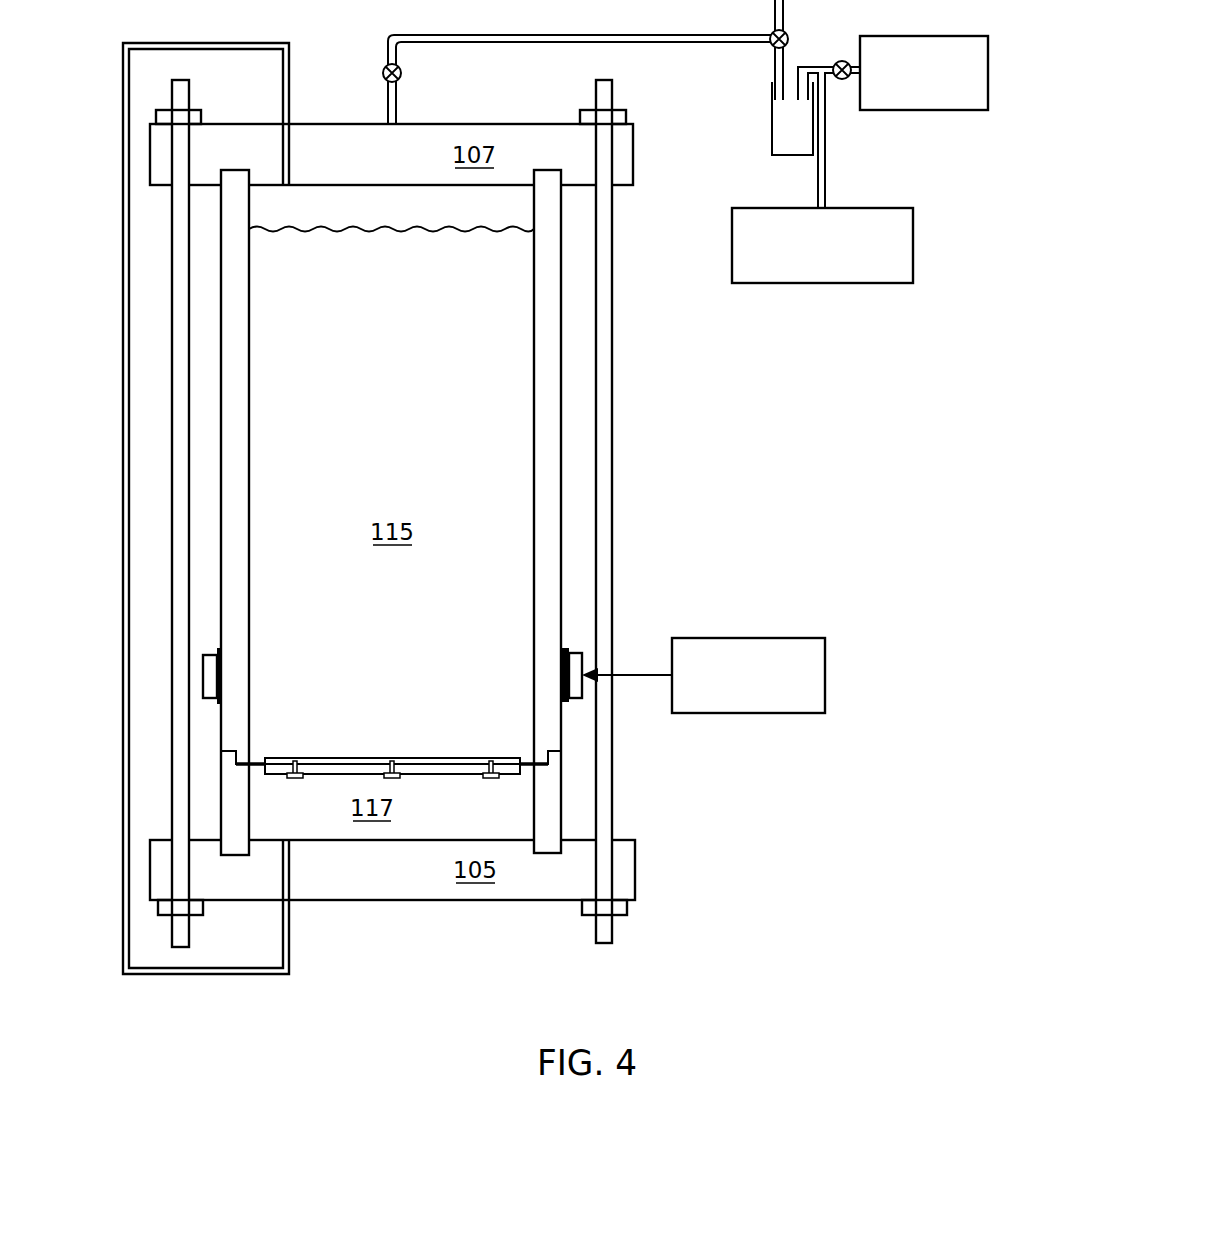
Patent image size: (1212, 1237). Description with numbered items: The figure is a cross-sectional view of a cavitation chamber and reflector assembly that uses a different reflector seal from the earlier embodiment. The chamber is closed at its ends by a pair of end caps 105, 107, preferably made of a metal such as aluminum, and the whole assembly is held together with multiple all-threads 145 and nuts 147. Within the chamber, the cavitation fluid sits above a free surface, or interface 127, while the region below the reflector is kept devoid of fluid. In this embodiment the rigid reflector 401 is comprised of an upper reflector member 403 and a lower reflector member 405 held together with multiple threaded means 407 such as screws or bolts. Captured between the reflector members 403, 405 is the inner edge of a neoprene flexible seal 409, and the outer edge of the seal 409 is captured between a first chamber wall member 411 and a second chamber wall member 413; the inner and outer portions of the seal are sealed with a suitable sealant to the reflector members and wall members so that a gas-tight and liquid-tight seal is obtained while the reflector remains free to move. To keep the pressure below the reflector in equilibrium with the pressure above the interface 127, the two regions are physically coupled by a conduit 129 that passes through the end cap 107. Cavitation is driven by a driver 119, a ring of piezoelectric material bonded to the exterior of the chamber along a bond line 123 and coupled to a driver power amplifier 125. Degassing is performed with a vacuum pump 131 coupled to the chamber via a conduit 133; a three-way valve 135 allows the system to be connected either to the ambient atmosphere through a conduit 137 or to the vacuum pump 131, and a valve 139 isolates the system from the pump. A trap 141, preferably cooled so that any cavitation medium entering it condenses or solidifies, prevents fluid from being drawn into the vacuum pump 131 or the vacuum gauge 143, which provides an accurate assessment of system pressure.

The end cap 105 is at (392, 870).
The end cap 107 is at (391, 154).
The driver 119 is at (578, 655).
The bond line 123 is at (565, 648).
The driver power amplifier 125 is at (748, 713).
The interface 127 is at (340, 226).
The conduit 129 is at (218, 43).
The vacuum pump 131 is at (915, 36).
The conduit 133 is at (387, 110).
The three-way valve 135 is at (772, 34).
The conduit 137 is at (786, 13).
The valve 139 is at (845, 80).
The trap 141 is at (765, 112).
The vacuum gauge 143 is at (913, 245).
The all-threads 145 is at (180, 288).
The nuts 147 is at (199, 118).
The rigid reflector 401 is at (391, 721).
The upper reflector member 403 is at (422, 759).
The lower reflector member 405 is at (418, 770).
The threaded means 407 is at (297, 778).
The neoprene flexible seal 409 is at (538, 762).
The first chamber wall member 411 is at (249, 655).
The second chamber wall member 413 is at (245, 818).